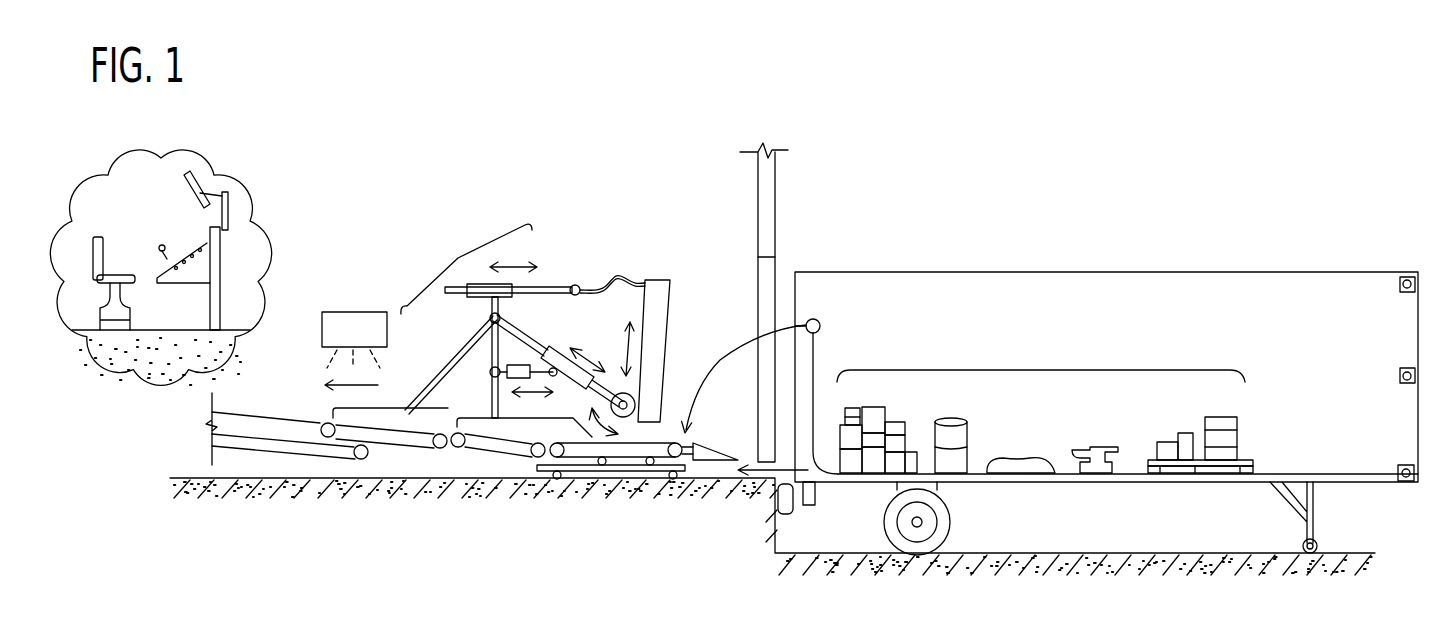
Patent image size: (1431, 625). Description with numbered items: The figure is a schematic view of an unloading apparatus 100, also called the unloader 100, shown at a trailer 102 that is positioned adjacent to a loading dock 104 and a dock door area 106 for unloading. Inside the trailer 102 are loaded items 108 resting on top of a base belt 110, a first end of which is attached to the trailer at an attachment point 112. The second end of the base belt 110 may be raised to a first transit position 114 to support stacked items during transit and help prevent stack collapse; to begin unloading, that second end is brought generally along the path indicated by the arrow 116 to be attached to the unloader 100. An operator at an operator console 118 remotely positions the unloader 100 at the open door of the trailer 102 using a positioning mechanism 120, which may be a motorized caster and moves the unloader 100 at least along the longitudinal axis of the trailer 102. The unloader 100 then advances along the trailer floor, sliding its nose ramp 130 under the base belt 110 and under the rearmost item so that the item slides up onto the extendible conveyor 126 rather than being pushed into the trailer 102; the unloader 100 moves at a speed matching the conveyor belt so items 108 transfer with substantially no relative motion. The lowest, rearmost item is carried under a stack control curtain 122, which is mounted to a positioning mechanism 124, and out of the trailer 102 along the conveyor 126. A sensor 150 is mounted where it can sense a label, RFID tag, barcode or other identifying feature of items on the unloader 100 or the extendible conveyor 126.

The unloading apparatus 100 is at (606, 208).
The trailer 102 is at (1085, 272).
The loading dock 104 is at (791, 250).
The dock door area 106 is at (760, 297).
The items 108 is at (1043, 370).
The base belt 110 is at (1273, 477).
The attachment point 112 is at (1399, 283).
The first transit position 114 is at (831, 352).
The arrow 116 is at (722, 360).
The operator console 118 is at (139, 354).
The positioning mechanism 120 is at (588, 471).
The stack control curtain 122 is at (658, 278).
The positioning mechanism 124 is at (458, 258).
The extendible conveyor 126 is at (453, 460).
The nose ramp 130 is at (707, 452).
The sensor 150 is at (352, 310).